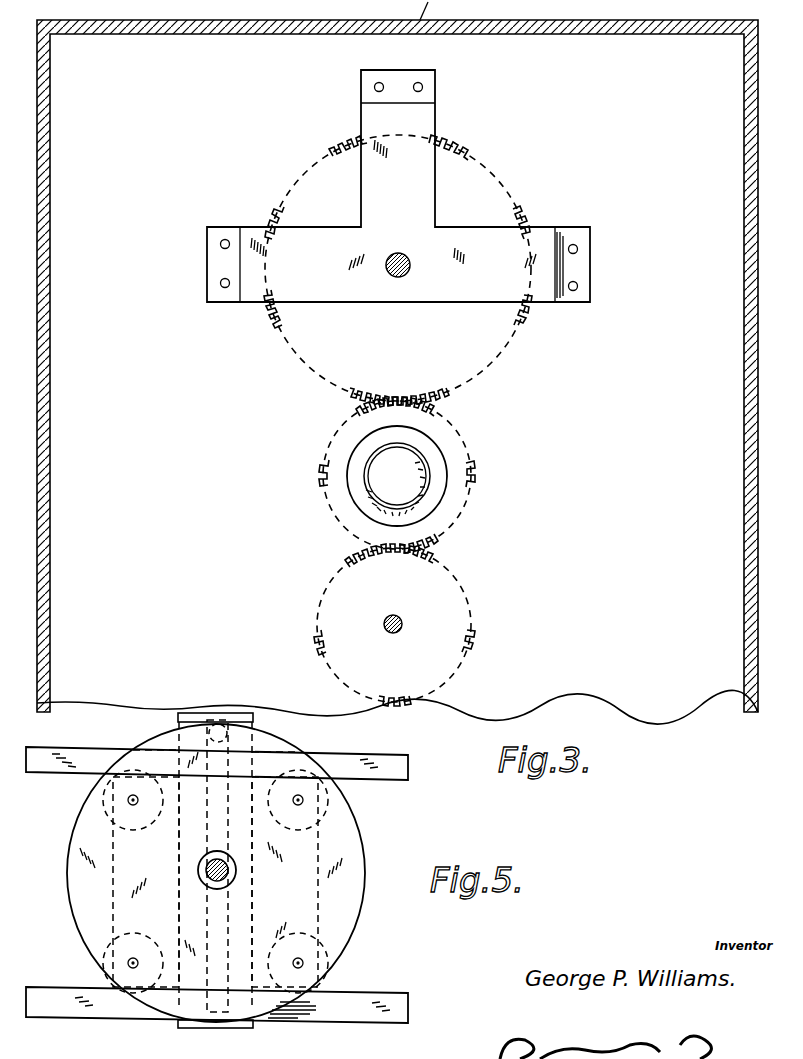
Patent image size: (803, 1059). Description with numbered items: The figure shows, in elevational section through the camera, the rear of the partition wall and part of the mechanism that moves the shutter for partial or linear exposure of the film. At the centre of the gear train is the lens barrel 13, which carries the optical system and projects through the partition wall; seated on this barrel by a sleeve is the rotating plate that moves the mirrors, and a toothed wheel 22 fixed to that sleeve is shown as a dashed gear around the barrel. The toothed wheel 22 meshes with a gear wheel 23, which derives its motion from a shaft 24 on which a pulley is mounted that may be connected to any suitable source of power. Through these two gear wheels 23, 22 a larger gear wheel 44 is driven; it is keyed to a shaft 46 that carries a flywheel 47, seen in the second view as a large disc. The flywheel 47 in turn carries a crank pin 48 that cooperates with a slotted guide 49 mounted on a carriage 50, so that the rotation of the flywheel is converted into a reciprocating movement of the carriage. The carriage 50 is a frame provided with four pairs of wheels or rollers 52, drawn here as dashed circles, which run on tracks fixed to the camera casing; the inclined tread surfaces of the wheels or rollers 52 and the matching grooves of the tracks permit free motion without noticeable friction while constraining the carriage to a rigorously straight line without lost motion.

In FIG. 3, the lens barrel 13 is at (430, 458).
In FIG. 3, the toothed wheel 22 is at (320, 483).
In FIG. 3, the gear wheel 23 is at (470, 640).
In FIG. 3, the shaft 24 is at (384, 623).
In FIG. 3, the gear wheel 44 is at (523, 310).
In FIG. 5, the shaft 46 is at (205, 880).
In FIG. 5, the flywheel 47 is at (362, 850).
In FIG. 5, the crank pin 48 is at (230, 734).
In FIG. 5, the slotted guide 49 is at (178, 716).
In FIG. 5, the carriage 50 is at (307, 902).
In FIG. 5, the wheels or rollers 52 is at (105, 803).